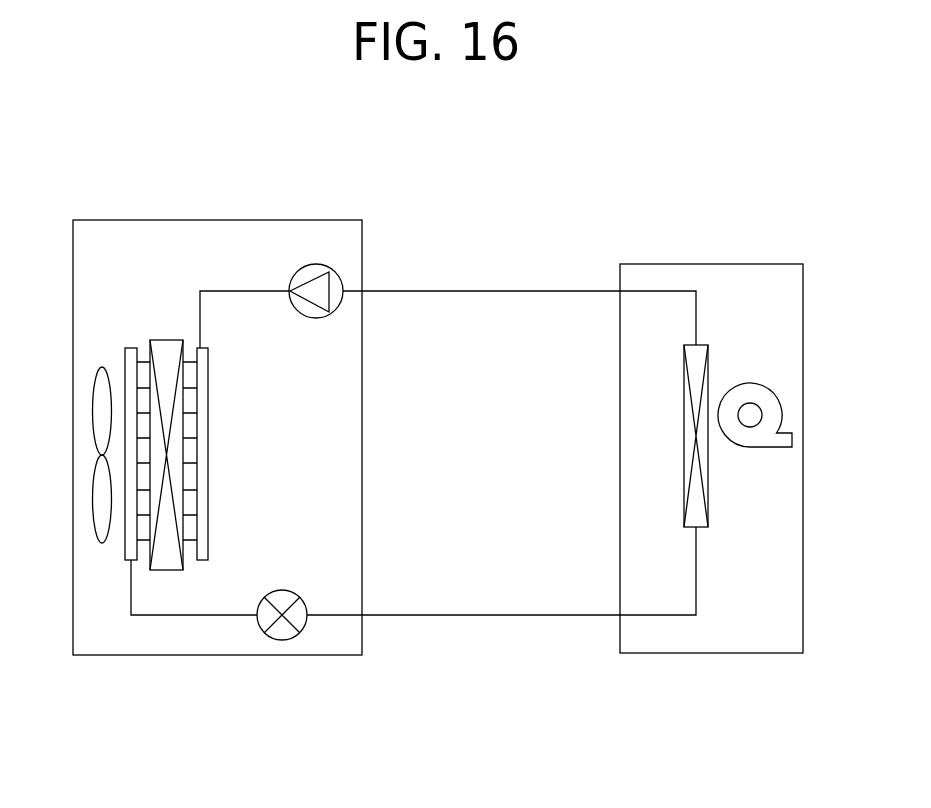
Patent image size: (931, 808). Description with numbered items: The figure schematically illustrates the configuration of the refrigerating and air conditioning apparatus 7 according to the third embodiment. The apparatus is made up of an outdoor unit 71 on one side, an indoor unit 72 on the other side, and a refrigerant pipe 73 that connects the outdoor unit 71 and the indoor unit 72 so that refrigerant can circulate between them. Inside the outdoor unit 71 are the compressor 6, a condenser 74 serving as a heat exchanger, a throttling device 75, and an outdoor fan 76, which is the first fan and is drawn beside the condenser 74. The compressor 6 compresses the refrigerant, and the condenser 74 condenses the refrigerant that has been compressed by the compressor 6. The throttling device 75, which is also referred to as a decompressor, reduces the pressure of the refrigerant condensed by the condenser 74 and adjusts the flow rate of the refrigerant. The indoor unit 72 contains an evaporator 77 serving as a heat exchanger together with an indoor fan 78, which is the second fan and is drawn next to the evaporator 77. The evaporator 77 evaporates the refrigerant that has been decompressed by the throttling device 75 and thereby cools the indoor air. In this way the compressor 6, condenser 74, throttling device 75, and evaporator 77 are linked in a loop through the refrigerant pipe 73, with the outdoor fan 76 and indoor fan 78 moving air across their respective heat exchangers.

The refrigerating and air conditioning apparatus 7 is at (93, 152).
The compressor 6 is at (316, 318).
The outdoor unit 71 is at (195, 655).
The indoor unit 72 is at (698, 653).
The refrigerant pipe 73 is at (495, 615).
The condenser 74 is at (163, 340).
The throttling device 75 is at (282, 640).
The outdoor fan 76 is at (102, 543).
The evaporator 77 is at (684, 510).
The indoor fan 78 is at (760, 448).